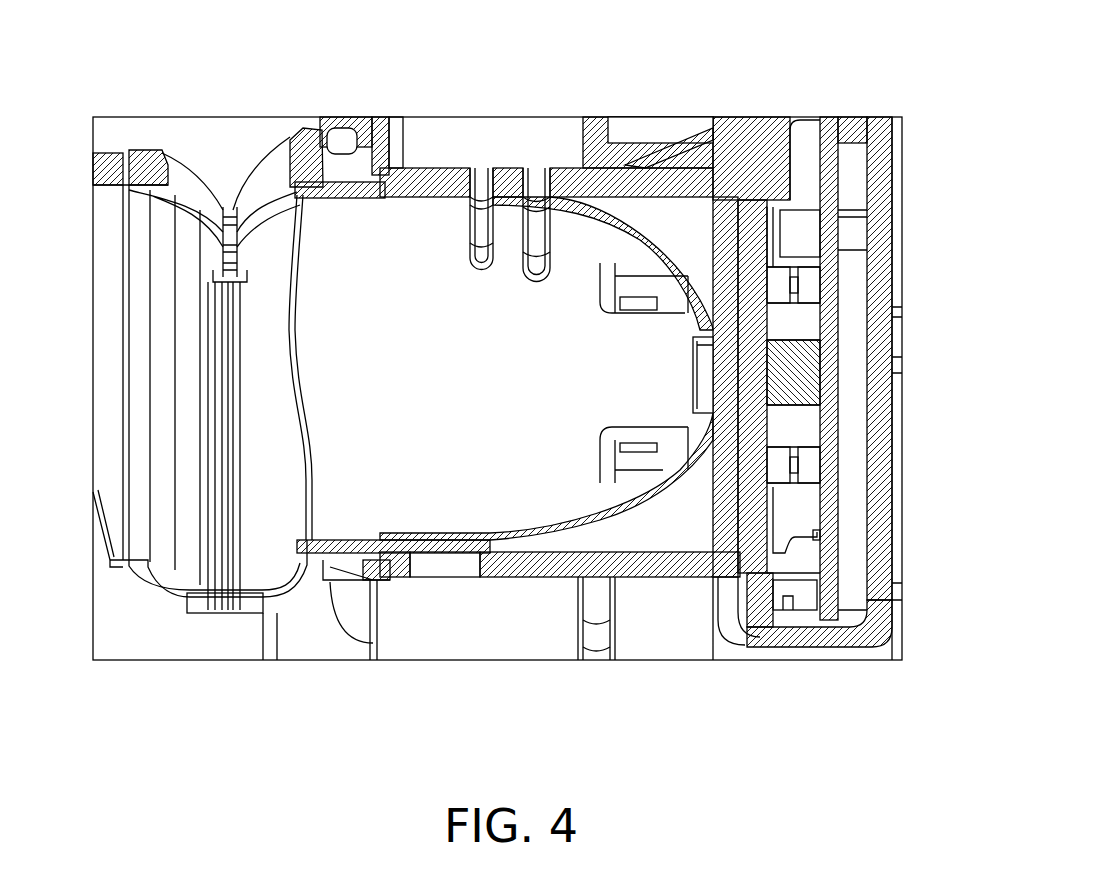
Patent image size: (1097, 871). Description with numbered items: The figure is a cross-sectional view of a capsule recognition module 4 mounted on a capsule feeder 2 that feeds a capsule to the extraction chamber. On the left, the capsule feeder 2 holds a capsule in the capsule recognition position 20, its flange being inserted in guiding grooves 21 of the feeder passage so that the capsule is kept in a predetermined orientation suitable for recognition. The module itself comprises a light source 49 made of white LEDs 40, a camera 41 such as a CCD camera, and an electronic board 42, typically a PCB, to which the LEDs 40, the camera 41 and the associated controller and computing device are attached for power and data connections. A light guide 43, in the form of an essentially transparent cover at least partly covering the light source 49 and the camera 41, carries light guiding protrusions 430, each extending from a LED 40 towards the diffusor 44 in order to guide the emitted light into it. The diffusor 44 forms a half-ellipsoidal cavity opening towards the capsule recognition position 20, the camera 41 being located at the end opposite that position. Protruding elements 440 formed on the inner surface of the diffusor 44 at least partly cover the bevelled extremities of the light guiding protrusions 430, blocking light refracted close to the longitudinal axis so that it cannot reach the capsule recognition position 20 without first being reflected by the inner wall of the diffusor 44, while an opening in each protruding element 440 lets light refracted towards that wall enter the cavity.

The capsule feeder 2 is at (248, 341).
The capsule recognition module 4 is at (605, 98).
The capsule recognition position 20 is at (198, 397).
The guiding grooves 21 is at (228, 556).
The white LED 40 is at (805, 282).
The camera 41 is at (800, 375).
The electronic board 42 is at (818, 537).
The light guide 43 is at (750, 502).
The diffusor 44 is at (403, 514).
The light source 49 is at (848, 344).
The light guiding protrusions 430 is at (640, 310).
The protruding elements 440 is at (608, 292).